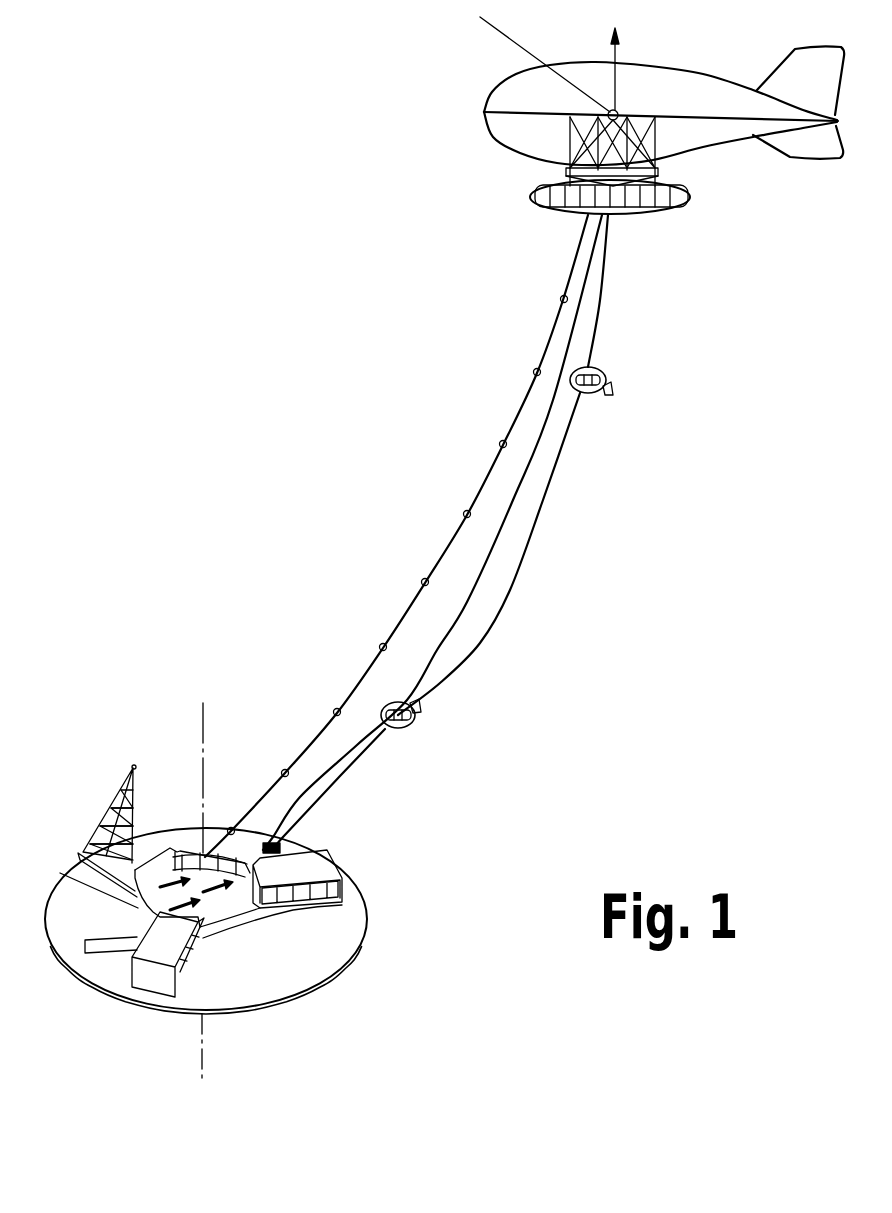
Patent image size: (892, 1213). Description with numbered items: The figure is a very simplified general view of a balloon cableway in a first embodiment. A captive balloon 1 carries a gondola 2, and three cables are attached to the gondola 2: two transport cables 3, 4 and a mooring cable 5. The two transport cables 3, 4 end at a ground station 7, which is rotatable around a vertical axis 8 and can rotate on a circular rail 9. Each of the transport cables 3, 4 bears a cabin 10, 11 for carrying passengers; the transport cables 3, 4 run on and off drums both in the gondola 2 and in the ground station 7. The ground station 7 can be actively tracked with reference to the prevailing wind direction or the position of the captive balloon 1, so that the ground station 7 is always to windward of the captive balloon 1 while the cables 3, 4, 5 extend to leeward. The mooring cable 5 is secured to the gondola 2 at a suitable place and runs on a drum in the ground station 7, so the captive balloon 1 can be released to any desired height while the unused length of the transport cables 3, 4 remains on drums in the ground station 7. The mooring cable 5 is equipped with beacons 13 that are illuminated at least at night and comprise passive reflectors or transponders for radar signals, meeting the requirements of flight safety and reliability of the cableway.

The captive balloon 1 is at (507, 98).
The gondola 2 is at (558, 213).
The transport cable 3 is at (547, 494).
The transport cable 4 is at (465, 602).
The mooring cable 5 is at (512, 411).
The ground station 7 is at (176, 810).
The vertical axis 8 is at (204, 718).
The circular rail 9 is at (366, 927).
The cabin 10 is at (608, 381).
The cabin 11 is at (416, 718).
The beacons 13 is at (380, 643).